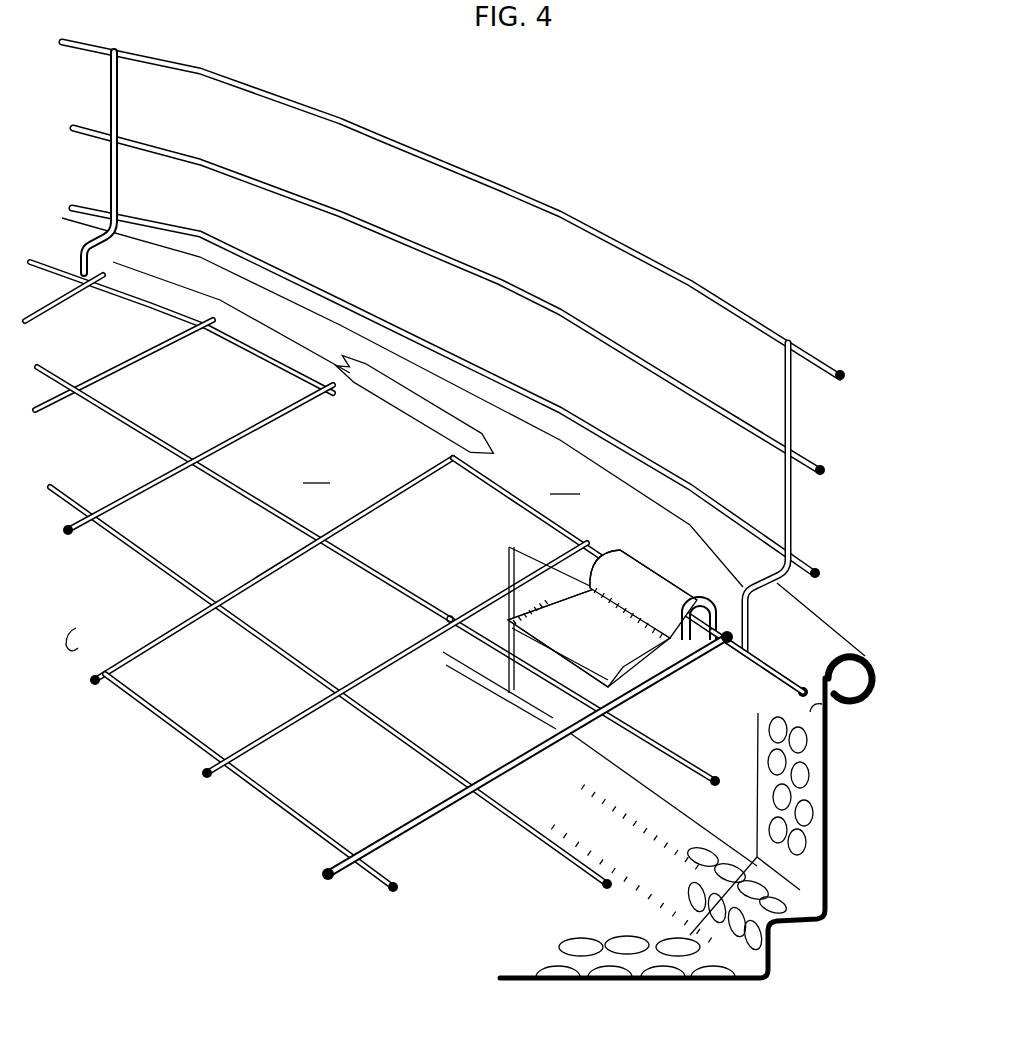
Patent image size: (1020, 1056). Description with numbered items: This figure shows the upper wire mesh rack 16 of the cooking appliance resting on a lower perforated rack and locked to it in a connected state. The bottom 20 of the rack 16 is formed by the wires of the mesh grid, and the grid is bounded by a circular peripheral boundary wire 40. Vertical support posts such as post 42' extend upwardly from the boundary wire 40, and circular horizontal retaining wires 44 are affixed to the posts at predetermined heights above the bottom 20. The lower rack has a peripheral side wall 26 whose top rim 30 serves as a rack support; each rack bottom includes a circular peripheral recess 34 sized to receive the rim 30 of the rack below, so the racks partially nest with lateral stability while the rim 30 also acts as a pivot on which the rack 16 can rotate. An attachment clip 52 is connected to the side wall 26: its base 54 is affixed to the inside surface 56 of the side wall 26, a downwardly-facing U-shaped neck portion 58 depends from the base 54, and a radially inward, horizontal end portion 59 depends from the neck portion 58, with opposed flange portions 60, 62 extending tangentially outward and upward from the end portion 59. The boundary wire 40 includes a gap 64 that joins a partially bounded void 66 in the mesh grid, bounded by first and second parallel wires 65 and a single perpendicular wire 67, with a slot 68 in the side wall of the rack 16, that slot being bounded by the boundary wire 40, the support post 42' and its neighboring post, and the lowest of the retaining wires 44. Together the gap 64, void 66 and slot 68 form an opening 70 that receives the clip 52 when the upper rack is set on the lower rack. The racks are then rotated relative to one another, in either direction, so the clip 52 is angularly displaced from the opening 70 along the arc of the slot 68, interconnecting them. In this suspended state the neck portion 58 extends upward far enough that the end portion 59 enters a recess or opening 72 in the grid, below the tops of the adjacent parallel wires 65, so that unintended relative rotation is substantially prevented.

The wire mesh rack 16 is at (503, 182).
The bottom 20 is at (416, 577).
The peripheral side wall 26 is at (828, 735).
The top rim 30 is at (862, 652).
The circular peripheral recess 34 is at (787, 940).
The peripheral boundary wire 40 is at (244, 346).
The vertical support post 42' is at (134, 162).
The horizontal retaining wire 44 is at (462, 354).
The attachment clip 52 is at (605, 742).
The base 54 is at (533, 697).
The inside surface 56 is at (832, 700).
The U-shaped neck portion 58 is at (685, 592).
The end portion 59 is at (604, 646).
The flange portion 60 is at (690, 672).
The flange portion 62 is at (545, 605).
The gap 64 is at (430, 447).
The parallel wires 65 is at (247, 432).
The partially bounded void 66 is at (320, 467).
The perpendicular wire 67 is at (235, 492).
The slot 68 is at (567, 478).
The opening 70 is at (387, 377).
The recess or opening 72 is at (460, 622).